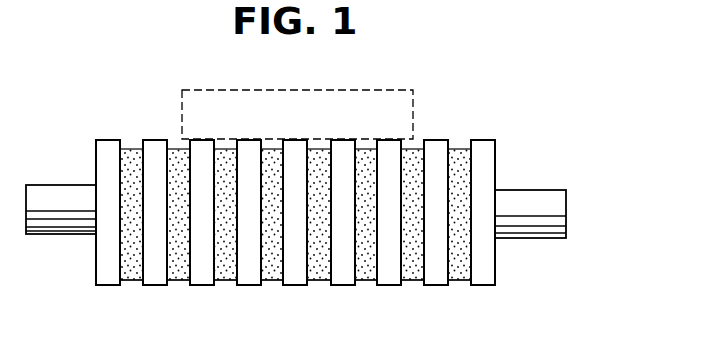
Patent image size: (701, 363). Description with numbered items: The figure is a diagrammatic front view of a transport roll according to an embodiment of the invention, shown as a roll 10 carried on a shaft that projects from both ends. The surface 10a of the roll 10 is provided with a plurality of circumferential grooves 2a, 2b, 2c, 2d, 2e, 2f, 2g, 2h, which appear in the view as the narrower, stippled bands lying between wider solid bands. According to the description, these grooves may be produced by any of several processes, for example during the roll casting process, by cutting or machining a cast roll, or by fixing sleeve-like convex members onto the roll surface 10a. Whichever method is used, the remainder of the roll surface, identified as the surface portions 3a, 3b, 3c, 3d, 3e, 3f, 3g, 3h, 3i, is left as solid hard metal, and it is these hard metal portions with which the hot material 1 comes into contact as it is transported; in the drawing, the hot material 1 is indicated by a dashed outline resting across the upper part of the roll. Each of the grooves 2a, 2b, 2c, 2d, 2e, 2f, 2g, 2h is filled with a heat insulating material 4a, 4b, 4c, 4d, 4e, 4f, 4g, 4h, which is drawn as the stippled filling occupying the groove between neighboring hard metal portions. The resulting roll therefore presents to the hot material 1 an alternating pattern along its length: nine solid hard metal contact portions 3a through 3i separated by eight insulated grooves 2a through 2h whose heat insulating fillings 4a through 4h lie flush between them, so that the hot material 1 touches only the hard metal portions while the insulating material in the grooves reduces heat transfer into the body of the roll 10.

The hot material 1 is at (382, 90).
The roll 10 is at (525, 190).
The roll surface 10a is at (492, 140).
The roll surface portion 3a is at (108, 140).
The roll surface portion 3b is at (155, 140).
The roll surface portion 3c is at (200, 140).
The roll surface portion 3d is at (249, 140).
The roll surface portion 3e is at (295, 140).
The roll surface portion 3f is at (342, 140).
The roll surface portion 3g is at (389, 140).
The roll surface portion 3h is at (435, 140).
The roll surface portion 3i is at (481, 140).
The heat insulating material 4a is at (125, 149).
The heat insulating material 4b is at (172, 149).
The heat insulating material 4c is at (225, 149).
The heat insulating material 4d is at (271, 149).
The heat insulating material 4e is at (318, 149).
The heat insulating material 4f is at (364, 149).
The heat insulating material 4g is at (411, 149).
The heat insulating material 4h is at (458, 149).
The circumferential groove 2a is at (139, 281).
The circumferential groove 2b is at (183, 281).
The circumferential groove 2c is at (230, 281).
The circumferential groove 2d is at (277, 281).
The circumferential groove 2e is at (324, 281).
The circumferential groove 2f is at (373, 281).
The circumferential groove 2g is at (420, 281).
The circumferential groove 2h is at (467, 281).